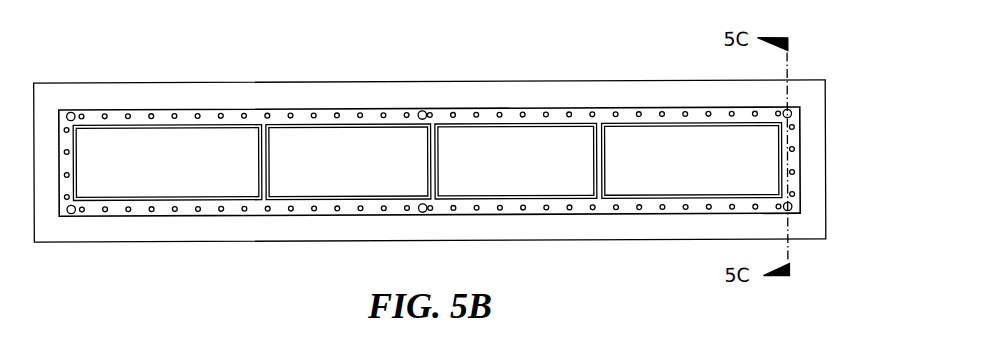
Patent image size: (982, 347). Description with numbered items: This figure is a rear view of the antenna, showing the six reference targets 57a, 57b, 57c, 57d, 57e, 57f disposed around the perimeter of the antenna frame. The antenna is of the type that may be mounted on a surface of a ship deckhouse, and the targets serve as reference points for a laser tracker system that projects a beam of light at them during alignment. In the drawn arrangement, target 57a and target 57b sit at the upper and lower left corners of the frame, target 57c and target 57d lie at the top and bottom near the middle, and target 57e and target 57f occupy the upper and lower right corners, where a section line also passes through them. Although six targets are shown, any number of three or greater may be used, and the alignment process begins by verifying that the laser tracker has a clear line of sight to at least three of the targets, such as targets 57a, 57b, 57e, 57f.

The reference target 57a is at (70, 111).
The reference target 57b is at (72, 213).
The reference target 57c is at (422, 111).
The reference target 57d is at (421, 213).
The reference target 57e is at (790, 111).
The reference target 57f is at (791, 212).